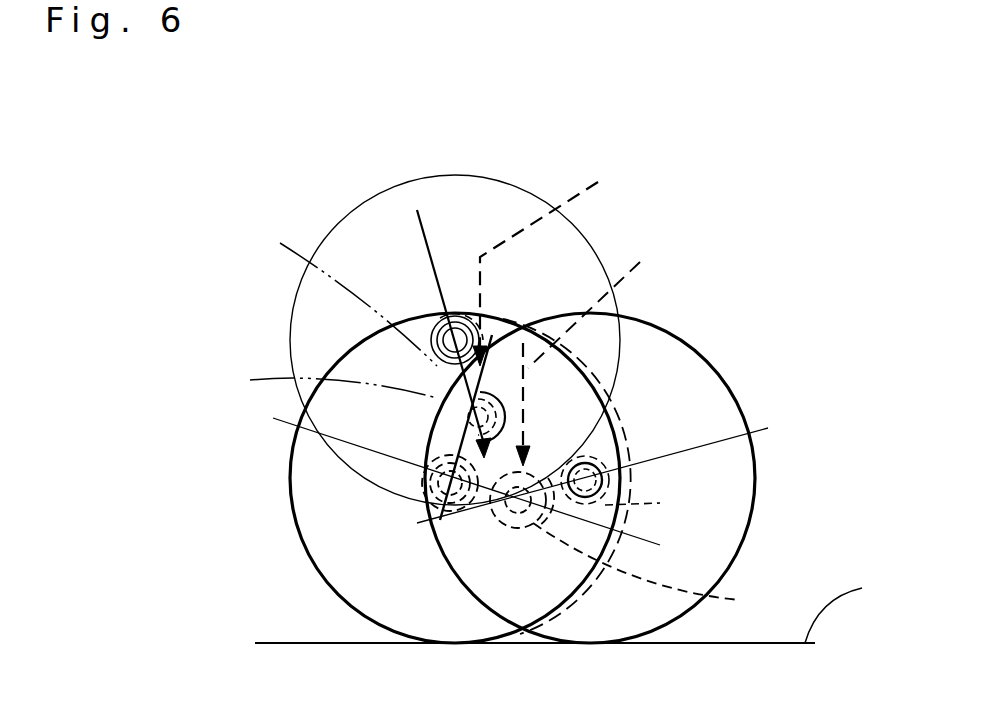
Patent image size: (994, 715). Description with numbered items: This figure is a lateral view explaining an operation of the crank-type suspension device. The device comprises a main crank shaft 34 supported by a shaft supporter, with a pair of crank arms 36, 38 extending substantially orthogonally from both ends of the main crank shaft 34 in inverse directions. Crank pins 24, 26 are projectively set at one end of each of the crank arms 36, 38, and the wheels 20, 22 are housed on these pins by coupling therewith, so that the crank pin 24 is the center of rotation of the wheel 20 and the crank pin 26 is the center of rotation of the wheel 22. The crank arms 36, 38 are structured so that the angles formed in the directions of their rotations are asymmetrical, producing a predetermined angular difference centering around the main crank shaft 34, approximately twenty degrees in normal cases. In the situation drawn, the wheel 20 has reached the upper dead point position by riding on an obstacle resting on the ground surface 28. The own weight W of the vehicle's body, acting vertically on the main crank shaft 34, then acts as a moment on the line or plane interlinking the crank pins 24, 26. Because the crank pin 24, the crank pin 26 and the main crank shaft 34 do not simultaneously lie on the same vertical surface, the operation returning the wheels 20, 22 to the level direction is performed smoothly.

The wheel 20 is at (503, 197).
The wheel 22 is at (323, 557).
The crank pin 24 is at (427, 302).
The crank pin 26 is at (440, 497).
The base 28 is at (818, 0).
The main crank shaft 34 is at (487, 0).
The crank arm 36 is at (465, 372).
The crank arm 38 is at (445, 430).
The own weight W is at (571, 312).